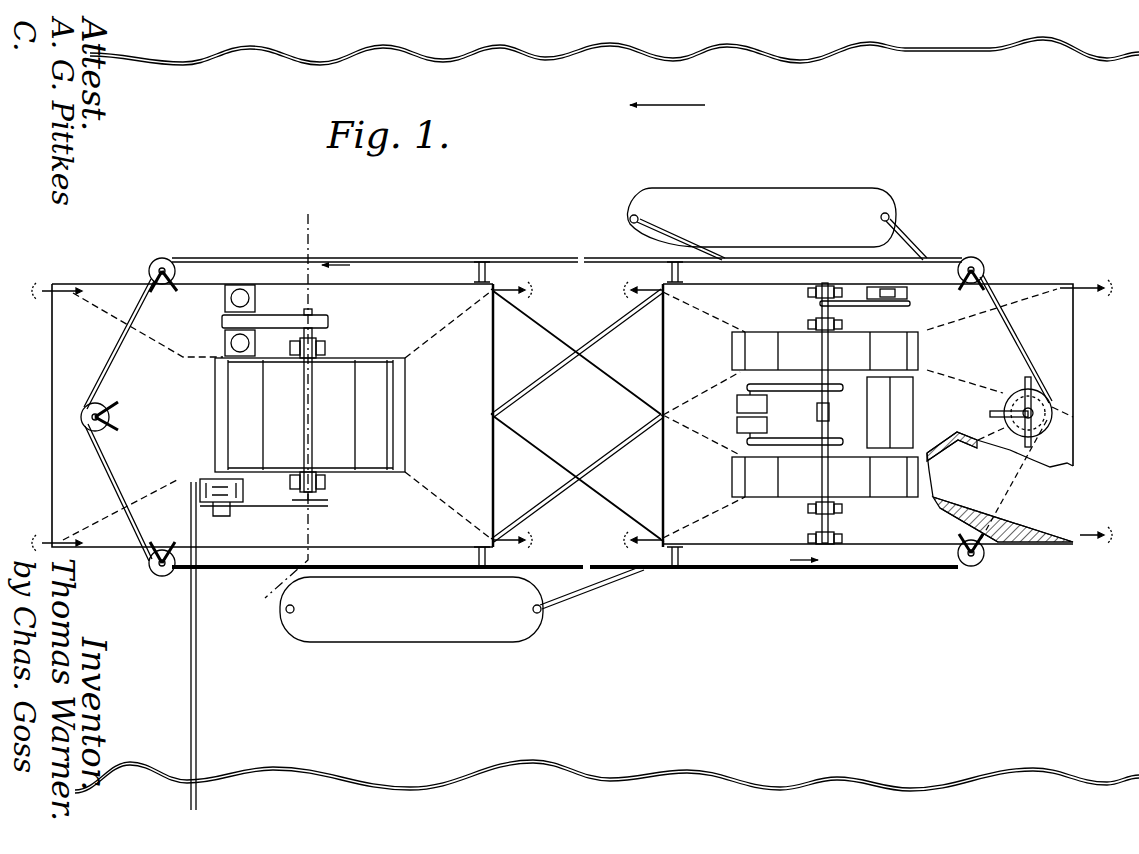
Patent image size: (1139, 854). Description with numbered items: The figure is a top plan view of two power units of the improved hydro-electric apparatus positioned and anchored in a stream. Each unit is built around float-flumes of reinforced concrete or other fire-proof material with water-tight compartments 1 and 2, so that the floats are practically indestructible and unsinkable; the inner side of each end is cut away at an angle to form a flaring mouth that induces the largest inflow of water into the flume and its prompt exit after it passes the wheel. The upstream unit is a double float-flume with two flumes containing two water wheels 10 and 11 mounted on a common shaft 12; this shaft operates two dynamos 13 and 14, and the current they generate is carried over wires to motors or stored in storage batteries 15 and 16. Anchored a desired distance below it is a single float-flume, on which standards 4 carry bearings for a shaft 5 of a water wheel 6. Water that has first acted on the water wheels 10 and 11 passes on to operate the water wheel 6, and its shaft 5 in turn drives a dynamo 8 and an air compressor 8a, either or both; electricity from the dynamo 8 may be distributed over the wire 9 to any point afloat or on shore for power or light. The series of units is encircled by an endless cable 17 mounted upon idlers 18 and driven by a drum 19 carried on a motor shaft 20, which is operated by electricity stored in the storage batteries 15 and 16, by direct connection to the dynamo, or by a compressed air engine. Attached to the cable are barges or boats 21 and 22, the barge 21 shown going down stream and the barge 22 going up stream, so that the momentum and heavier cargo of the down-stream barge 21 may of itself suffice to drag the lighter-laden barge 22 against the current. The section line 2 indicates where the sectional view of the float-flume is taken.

The water-tight compartment 1 is at (405, 295).
The water-tight compartment 2 is at (507, 493).
The standards 4 is at (317, 350).
The shaft 5 is at (312, 334).
The water wheel 6 is at (372, 437).
The dynamo 8 is at (200, 487).
The air compressor 8a is at (240, 288).
The wire 9 is at (191, 672).
The water wheel 10 is at (748, 350).
The water wheel 11 is at (778, 470).
The common shaft 12 is at (820, 520).
The dynamo 13 is at (750, 426).
The dynamo 14 is at (740, 405).
The storage battery 15 is at (878, 412).
The storage battery 16 is at (905, 432).
The endless cable 17 is at (1023, 350).
The idlers 18 is at (162, 260).
The drum 19 is at (1043, 407).
The motor shaft 20 is at (1034, 418).
The barge or boat 21 is at (777, 224).
The barge or boat 22 is at (462, 604).